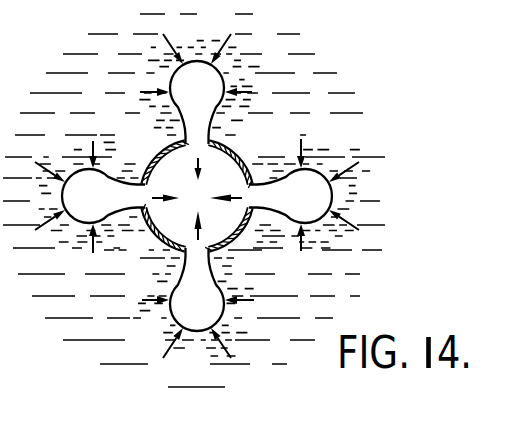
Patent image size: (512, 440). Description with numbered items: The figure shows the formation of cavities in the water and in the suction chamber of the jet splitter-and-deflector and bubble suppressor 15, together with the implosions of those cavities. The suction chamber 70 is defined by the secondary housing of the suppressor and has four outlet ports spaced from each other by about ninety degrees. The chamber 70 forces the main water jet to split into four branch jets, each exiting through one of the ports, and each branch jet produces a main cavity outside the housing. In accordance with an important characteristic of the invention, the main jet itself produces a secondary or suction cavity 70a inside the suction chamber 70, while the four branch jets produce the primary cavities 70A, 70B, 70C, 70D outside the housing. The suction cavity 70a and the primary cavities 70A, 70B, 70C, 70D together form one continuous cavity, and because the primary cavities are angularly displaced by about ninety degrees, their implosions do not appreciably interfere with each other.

The jet splitter-and-deflector and bubble suppressor 15 is at (146, 148).
The suction chamber 70 is at (215, 178).
The secondary or suction cavity 70a is at (228, 177).
The primary cavity 70A is at (308, 199).
The primary cavity 70B is at (188, 296).
The primary cavity 70C is at (102, 205).
The primary cavity 70D is at (195, 77).